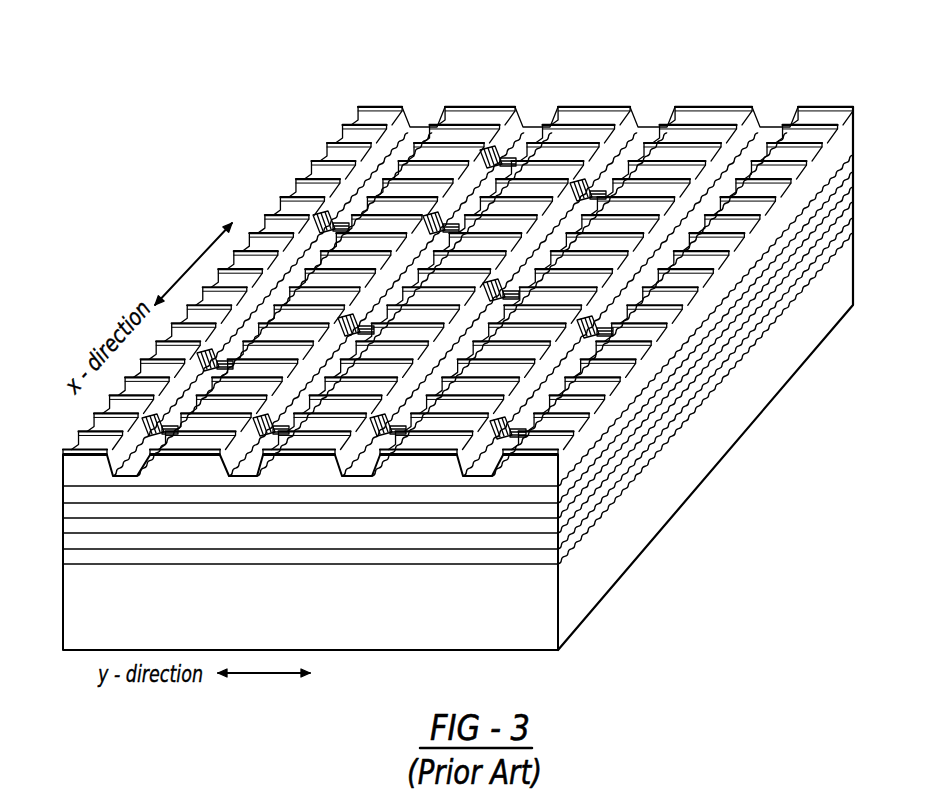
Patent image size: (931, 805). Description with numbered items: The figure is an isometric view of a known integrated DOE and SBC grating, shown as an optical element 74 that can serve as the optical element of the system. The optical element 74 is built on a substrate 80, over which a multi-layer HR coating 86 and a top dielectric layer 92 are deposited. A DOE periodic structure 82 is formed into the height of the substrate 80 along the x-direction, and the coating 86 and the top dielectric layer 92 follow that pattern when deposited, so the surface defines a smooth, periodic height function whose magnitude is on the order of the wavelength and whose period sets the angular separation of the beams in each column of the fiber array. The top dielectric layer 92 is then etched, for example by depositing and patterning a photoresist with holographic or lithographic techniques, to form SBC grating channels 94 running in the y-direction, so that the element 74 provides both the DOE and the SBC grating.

The optical element 74 is at (437, 356).
The substrate 80 is at (418, 608).
The DOE periodic structure 82 is at (670, 432).
The multi-layer HR coating 86 is at (62, 512).
The top dielectric layer 92 is at (88, 470).
The SBC grating channels 94 is at (527, 133).